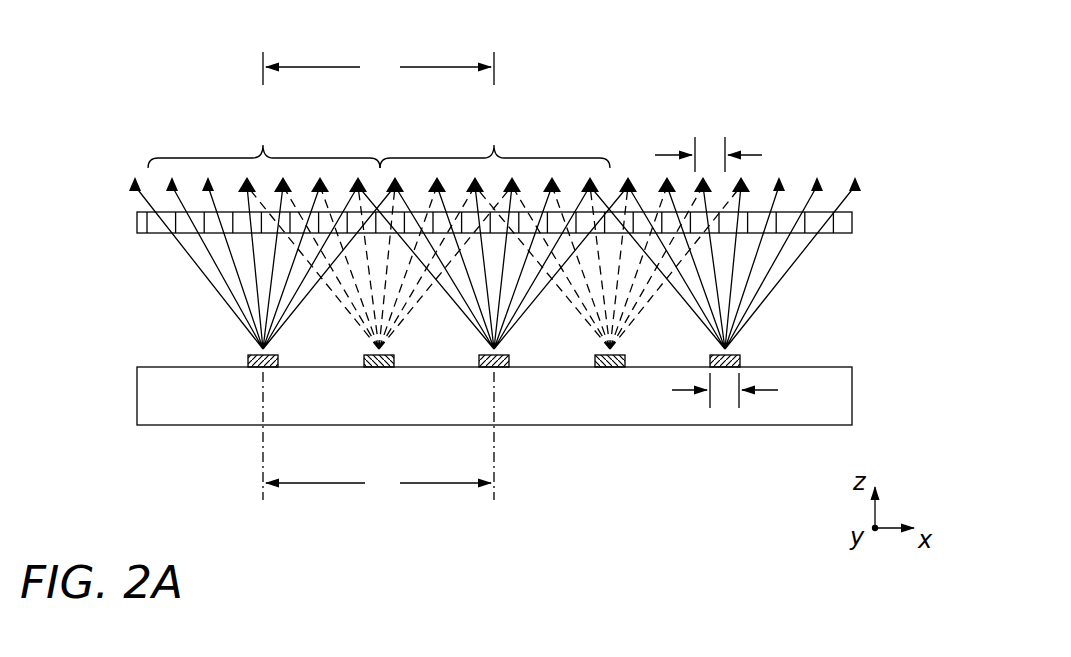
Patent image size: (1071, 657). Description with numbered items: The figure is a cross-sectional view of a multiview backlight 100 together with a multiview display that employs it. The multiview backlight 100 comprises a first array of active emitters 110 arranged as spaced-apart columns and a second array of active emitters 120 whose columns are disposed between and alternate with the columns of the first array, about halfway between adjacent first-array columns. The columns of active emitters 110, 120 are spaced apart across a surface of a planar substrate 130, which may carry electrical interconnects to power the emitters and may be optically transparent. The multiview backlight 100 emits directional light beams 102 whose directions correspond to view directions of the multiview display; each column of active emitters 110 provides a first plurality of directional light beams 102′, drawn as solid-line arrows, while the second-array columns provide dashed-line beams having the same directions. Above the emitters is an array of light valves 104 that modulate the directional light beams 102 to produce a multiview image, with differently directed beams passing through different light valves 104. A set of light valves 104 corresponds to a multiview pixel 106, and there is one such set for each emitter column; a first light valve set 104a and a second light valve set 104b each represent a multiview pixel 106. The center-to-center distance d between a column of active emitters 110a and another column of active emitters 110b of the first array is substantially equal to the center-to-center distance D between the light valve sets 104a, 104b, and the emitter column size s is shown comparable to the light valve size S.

The multiview backlight 100 is at (810, 48).
The directional light beams 102 is at (830, 262).
The first plurality of directional light beams 102′ is at (188, 278).
The light valves 104 is at (125, 217).
The first light valve set 104a is at (264, 136).
The second light valve set 104b is at (495, 136).
The multiview pixel 106 is at (207, 120).
The active emitters of the first active emitter array 110 is at (748, 352).
The column of active emitters of the first active emitter array 110a is at (238, 348).
The another column of active emitters of the first active emitter array 110b is at (503, 378).
The active emitters of the second active emitter array 120 is at (380, 378).
The planar substrate 130 is at (137, 397).